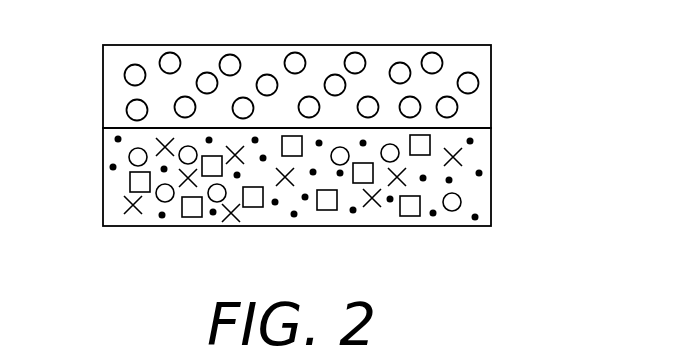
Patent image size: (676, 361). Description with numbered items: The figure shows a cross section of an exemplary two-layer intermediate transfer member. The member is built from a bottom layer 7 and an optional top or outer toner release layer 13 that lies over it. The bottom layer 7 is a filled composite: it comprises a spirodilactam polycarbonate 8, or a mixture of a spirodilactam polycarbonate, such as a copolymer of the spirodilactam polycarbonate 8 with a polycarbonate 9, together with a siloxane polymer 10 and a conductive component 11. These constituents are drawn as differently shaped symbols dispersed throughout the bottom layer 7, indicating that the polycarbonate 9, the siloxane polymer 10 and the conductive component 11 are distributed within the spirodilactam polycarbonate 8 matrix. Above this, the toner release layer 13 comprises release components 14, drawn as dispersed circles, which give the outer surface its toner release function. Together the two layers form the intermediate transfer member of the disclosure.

The bottom layer 7 is at (491, 142).
The spirodilactam polycarbonate 8 is at (461, 200).
The polycarbonate 9 is at (326, 210).
The siloxane polymer 10 is at (130, 203).
The conductive component 11 is at (116, 139).
The top or outer toner release layer 13 is at (491, 95).
The release components 14 is at (292, 53).